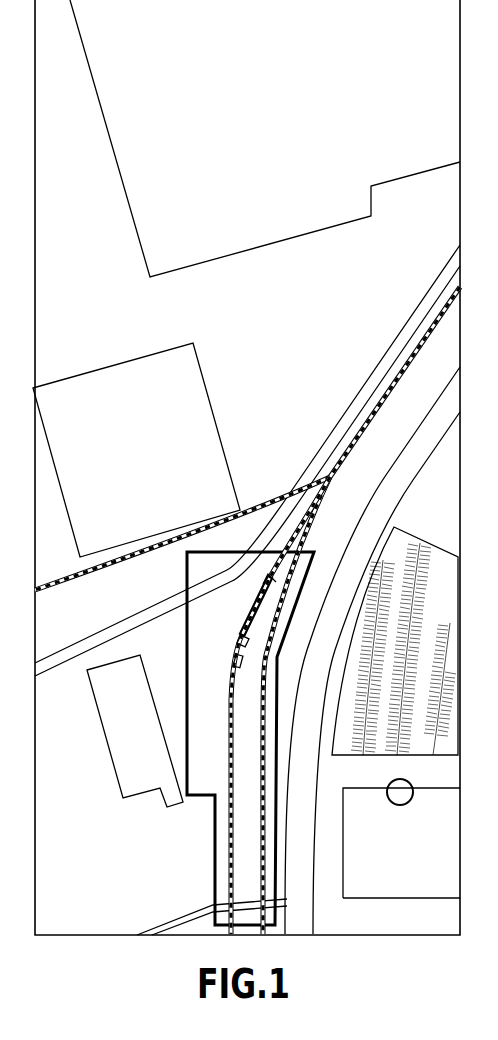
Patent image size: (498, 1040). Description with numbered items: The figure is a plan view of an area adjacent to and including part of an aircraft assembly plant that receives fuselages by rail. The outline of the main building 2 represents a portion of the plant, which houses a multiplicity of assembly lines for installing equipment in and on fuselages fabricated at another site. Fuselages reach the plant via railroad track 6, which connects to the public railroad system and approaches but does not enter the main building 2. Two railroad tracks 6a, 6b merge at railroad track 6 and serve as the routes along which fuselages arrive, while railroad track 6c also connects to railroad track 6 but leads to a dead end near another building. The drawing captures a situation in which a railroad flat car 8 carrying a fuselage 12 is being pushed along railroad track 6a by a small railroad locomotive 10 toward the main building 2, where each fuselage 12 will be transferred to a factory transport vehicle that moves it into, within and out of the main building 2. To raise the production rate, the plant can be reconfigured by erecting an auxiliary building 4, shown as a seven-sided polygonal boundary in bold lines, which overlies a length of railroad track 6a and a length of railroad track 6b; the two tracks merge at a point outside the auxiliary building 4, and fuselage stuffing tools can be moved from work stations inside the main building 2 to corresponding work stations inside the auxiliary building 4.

The main building 2 is at (133, 220).
The auxiliary building 4 is at (213, 858).
The railroad track 6 is at (390, 392).
The railroad track 6a is at (230, 732).
The railroad track 6b is at (264, 787).
The railroad track 6c is at (93, 576).
The railroad flat car 8 is at (240, 632).
The railroad locomotive 10 is at (237, 658).
The fuselage 12 is at (257, 602).